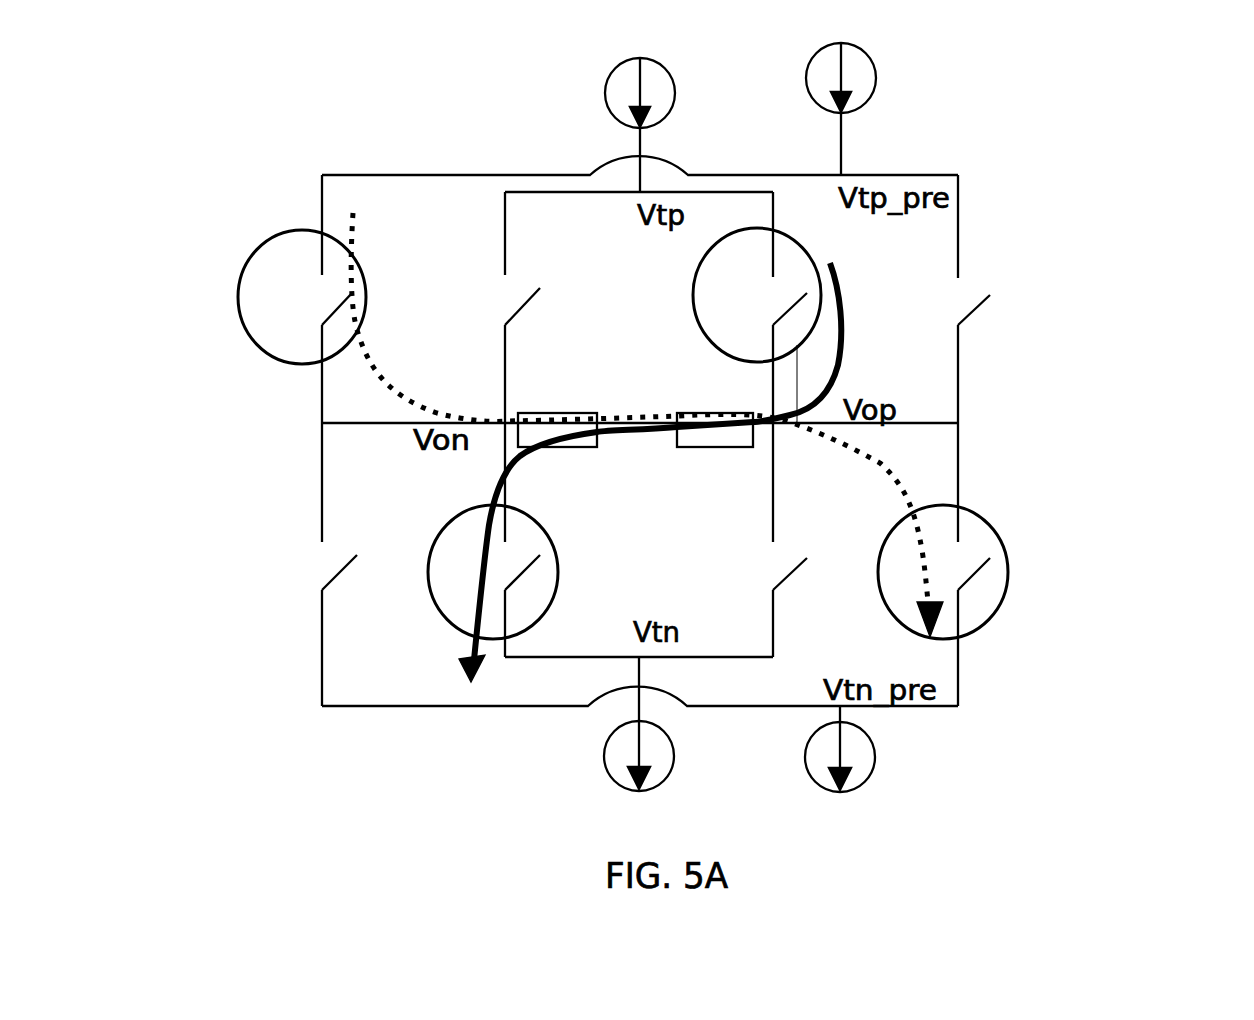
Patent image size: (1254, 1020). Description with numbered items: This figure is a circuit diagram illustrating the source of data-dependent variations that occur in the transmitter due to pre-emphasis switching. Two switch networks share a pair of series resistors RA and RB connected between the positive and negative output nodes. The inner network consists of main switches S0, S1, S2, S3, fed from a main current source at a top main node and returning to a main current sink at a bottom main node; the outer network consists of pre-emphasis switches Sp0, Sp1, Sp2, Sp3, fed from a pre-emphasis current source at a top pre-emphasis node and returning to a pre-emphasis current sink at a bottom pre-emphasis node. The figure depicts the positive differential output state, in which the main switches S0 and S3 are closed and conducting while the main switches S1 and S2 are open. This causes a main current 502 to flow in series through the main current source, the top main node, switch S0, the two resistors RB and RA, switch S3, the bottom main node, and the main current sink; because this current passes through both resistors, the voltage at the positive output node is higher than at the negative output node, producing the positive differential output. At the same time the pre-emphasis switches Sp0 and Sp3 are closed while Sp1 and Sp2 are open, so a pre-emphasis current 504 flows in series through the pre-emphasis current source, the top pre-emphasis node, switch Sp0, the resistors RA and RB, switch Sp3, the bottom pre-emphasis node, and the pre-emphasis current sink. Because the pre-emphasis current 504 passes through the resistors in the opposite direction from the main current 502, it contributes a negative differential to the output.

The main current 502 is at (1050, 210).
The pre-emphasis current 504 is at (1108, 405).
The pre-emphasis switch Sp0 is at (302, 297).
The pre-emphasis switch Sp1 is at (1011, 302).
The pre-emphasis switch Sp2 is at (312, 571).
The pre-emphasis switch Sp3 is at (978, 572).
The main switch S0 is at (757, 295).
The main switch S1 is at (496, 302).
The main switch S2 is at (762, 571).
The main switch S3 is at (512, 572).
The resistor RA is at (557, 410).
The resistor RB is at (715, 412).